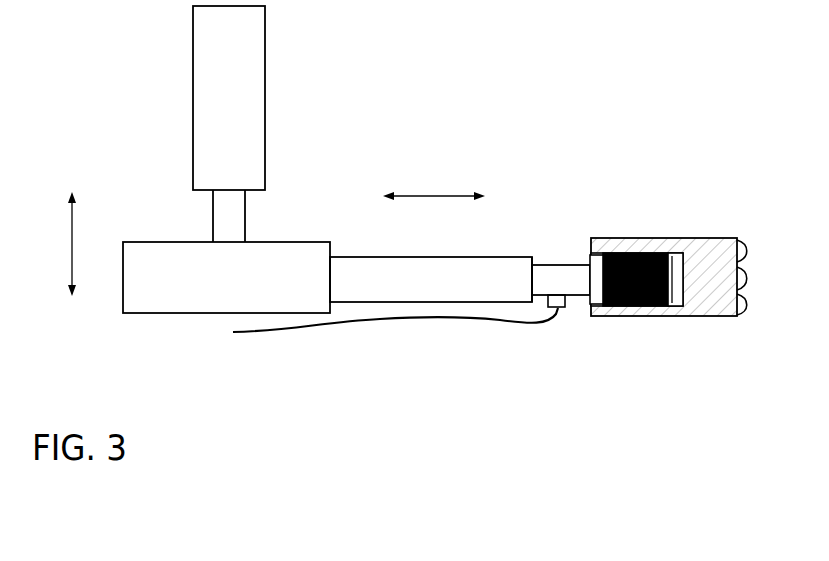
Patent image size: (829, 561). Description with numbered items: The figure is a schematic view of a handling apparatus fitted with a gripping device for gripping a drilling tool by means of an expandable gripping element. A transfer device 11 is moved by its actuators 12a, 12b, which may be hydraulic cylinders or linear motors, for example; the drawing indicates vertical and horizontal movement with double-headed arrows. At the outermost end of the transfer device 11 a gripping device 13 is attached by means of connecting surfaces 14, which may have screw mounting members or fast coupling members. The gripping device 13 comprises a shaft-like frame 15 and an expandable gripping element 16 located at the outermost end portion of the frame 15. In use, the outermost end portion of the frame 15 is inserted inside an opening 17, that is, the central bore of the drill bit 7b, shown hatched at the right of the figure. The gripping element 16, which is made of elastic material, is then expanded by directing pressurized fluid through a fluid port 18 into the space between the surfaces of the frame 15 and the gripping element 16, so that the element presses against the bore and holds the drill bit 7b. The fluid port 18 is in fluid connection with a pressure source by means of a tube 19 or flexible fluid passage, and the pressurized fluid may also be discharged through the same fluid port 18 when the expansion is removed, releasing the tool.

The drill bit 7b is at (706, 255).
The transfer device 11 is at (124, 142).
The actuator 12a is at (215, 75).
The actuator 12b is at (164, 302).
The gripping device 13 is at (561, 231).
The connecting surfaces 14 is at (530, 292).
The frame 15 is at (558, 275).
The expandable gripping element 16 is at (635, 253).
The opening 17 is at (594, 304).
The fluid port 18 is at (560, 309).
The tube 19 is at (413, 328).